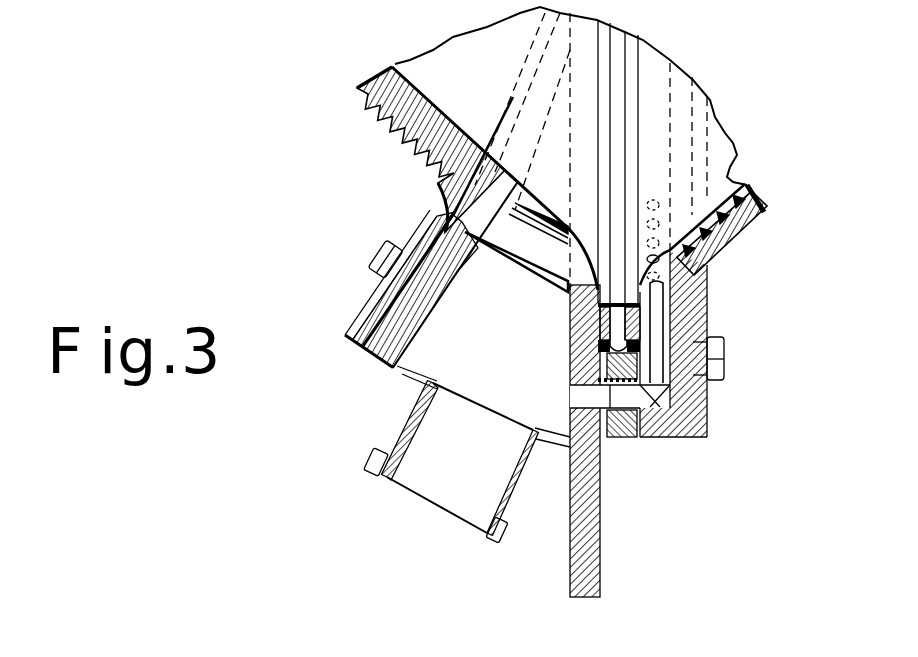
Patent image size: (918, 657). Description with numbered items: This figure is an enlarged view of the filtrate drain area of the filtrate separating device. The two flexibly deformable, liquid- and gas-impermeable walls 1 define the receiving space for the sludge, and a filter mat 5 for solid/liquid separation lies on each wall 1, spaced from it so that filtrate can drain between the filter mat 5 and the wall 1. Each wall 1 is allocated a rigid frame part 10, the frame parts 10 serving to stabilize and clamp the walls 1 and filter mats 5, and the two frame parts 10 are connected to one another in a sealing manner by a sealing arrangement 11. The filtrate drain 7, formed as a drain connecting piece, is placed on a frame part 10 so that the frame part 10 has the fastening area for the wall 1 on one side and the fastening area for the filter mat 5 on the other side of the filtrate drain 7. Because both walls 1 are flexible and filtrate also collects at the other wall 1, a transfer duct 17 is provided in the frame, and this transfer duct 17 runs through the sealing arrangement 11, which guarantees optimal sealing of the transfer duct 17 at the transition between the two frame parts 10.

The wall 1 is at (400, 138).
The filter mat 5 is at (436, 100).
The filtrate drain 7 is at (417, 473).
The frame part 10 is at (387, 352).
The sealing arrangement 11 is at (628, 432).
The transfer duct 17 is at (693, 318).